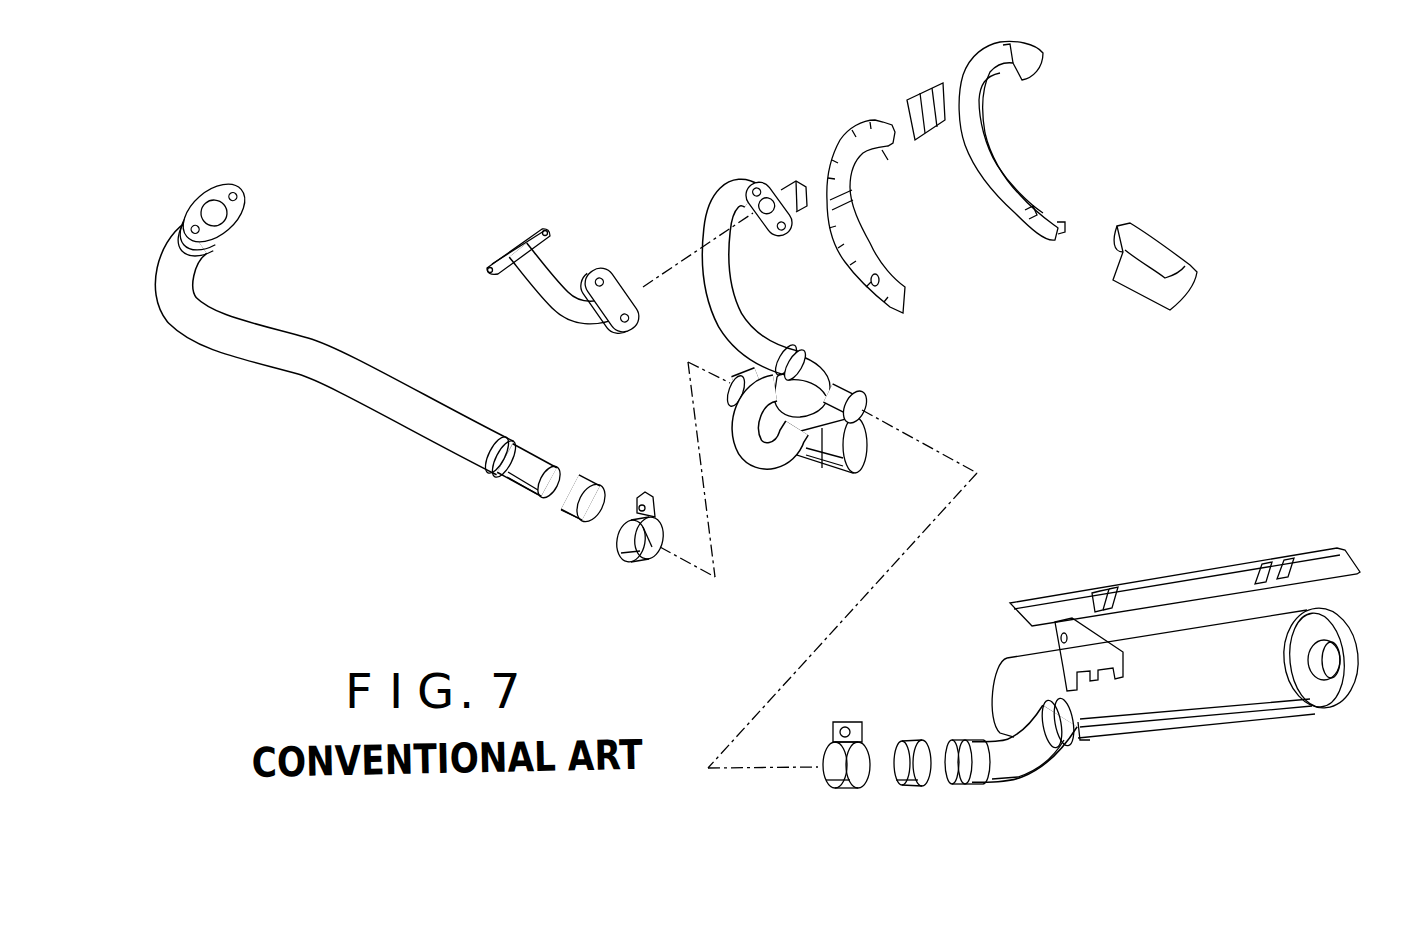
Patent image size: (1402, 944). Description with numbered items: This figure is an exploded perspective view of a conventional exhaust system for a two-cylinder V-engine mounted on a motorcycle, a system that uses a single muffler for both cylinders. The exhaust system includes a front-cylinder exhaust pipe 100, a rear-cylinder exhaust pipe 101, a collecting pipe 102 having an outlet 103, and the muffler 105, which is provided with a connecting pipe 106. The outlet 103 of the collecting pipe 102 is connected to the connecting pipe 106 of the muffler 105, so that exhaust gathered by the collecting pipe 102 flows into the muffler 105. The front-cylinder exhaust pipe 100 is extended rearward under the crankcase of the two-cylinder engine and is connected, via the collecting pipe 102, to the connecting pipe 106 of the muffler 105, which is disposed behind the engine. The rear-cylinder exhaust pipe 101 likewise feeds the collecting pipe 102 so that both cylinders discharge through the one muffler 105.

The front-cylinder exhaust pipe 100 is at (303, 363).
The rear-cylinder exhaust pipe 101 is at (547, 293).
The collecting pipe 102 is at (836, 359).
The outlet 103 is at (862, 398).
The muffler 105 is at (1190, 720).
The connecting pipe 106 is at (958, 777).